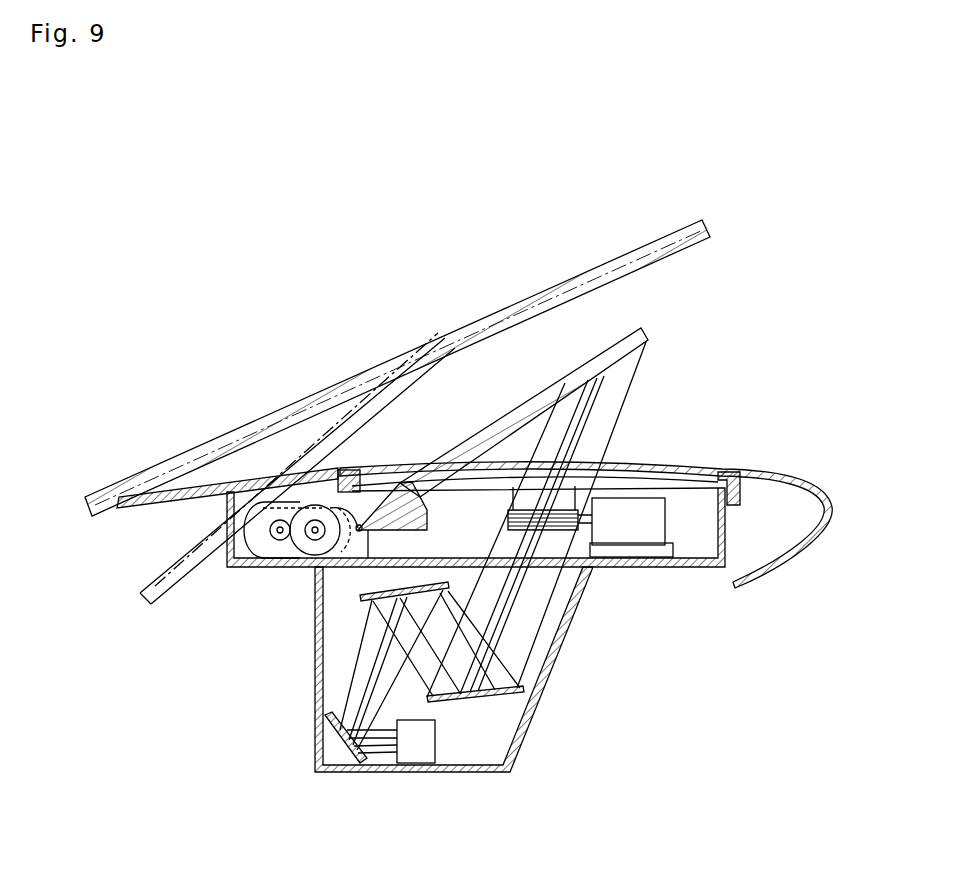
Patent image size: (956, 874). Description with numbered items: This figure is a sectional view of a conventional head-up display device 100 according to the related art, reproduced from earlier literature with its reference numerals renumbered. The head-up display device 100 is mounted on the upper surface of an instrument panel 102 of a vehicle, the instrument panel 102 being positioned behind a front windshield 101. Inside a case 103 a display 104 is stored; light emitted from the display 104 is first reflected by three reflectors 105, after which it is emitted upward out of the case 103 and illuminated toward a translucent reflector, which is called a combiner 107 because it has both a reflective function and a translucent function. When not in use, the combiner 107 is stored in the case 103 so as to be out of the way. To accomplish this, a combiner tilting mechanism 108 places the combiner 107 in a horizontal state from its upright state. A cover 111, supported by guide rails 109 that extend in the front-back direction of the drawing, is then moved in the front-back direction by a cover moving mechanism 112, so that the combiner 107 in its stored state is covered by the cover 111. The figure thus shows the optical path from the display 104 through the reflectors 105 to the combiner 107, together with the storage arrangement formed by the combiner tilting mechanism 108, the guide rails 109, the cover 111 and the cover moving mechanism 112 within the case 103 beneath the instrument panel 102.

The head-up display device 100 is at (680, 654).
The front windshield 101 is at (318, 400).
The instrument panel 102 is at (775, 472).
The case 103 is at (560, 645).
The display 104 is at (415, 758).
The reflectors 105 is at (373, 587).
The combiner 107 is at (547, 390).
The combiner tilting mechanism 108 is at (260, 542).
The guide rails 109 is at (352, 468).
The cover 111 is at (662, 478).
The cover moving mechanism 112 is at (627, 533).